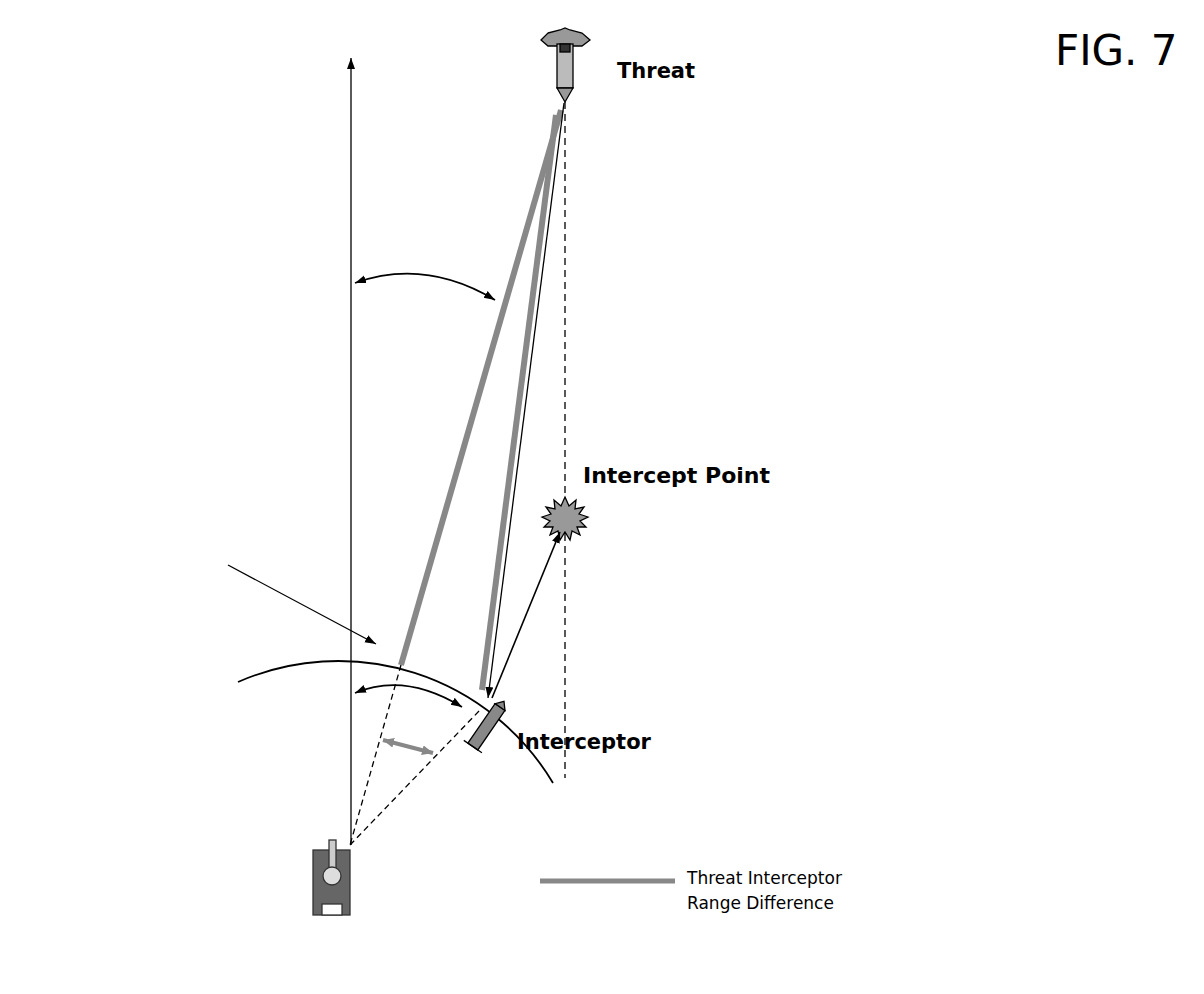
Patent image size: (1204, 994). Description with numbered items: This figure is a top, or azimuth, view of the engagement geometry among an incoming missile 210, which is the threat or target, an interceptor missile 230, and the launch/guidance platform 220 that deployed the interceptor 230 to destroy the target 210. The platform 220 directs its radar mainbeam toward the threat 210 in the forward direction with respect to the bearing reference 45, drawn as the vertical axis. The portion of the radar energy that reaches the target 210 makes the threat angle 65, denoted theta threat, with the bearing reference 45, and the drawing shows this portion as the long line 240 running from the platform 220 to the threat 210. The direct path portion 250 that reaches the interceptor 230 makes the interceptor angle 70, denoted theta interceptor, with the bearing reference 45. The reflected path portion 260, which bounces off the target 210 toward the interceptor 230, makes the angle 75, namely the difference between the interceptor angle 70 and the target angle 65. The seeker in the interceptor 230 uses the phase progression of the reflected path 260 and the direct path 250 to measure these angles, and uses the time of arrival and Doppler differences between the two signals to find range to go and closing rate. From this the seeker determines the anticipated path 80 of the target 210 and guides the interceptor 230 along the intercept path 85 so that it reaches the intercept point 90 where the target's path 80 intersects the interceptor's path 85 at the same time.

The bearing reference 45 is at (346, 133).
The threat angle 65 is at (447, 281).
The interceptor angle 70 is at (438, 692).
The angle difference 75 is at (405, 758).
The anticipated path of the target 80 is at (576, 313).
The intercept path 85 is at (516, 648).
The intercept point 90 is at (586, 520).
The incoming missile 210 is at (551, 73).
The launch/guidance platform 220 is at (311, 834).
The interceptor missile 230 is at (491, 754).
The line of sight to threat 240 is at (486, 372).
The direct path portion 250 is at (391, 812).
The reflected path portion 260 is at (531, 410).